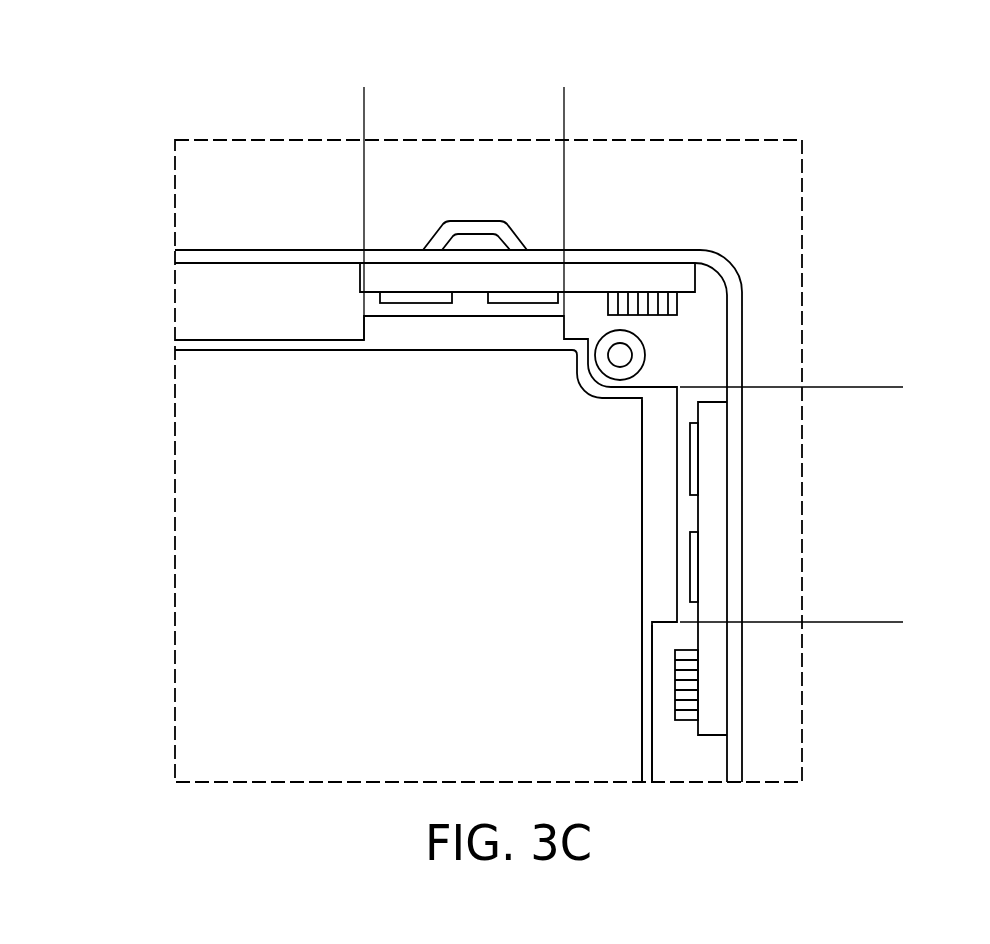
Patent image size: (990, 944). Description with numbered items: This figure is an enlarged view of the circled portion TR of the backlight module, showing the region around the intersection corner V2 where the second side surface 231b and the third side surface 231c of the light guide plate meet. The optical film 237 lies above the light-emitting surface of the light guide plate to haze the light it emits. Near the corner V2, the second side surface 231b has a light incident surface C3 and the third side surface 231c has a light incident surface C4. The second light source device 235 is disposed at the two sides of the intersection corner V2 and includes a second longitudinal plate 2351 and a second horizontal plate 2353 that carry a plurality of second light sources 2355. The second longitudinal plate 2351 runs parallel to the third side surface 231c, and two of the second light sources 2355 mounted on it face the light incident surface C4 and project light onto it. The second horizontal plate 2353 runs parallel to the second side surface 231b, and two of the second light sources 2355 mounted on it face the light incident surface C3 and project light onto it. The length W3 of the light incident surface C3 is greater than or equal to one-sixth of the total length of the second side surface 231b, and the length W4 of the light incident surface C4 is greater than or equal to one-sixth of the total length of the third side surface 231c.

The circled portion TR is at (160, 128).
The second light source device 235 is at (910, 173).
The second horizontal plate 2353 is at (512, 278).
The second longitudinal plate 2351 is at (715, 417).
The second light sources 2355 is at (412, 297).
The light incident surface C3 is at (495, 328).
The light incident surface C4 is at (665, 555).
The intersection corner V2 is at (587, 385).
The second side surface 231b is at (212, 338).
The third side surface 231c is at (652, 758).
The optical film 237 is at (202, 665).
The length of light incident surface C3 W3 is at (564, 102).
The length of light incident surface C4 W4 is at (889, 387).